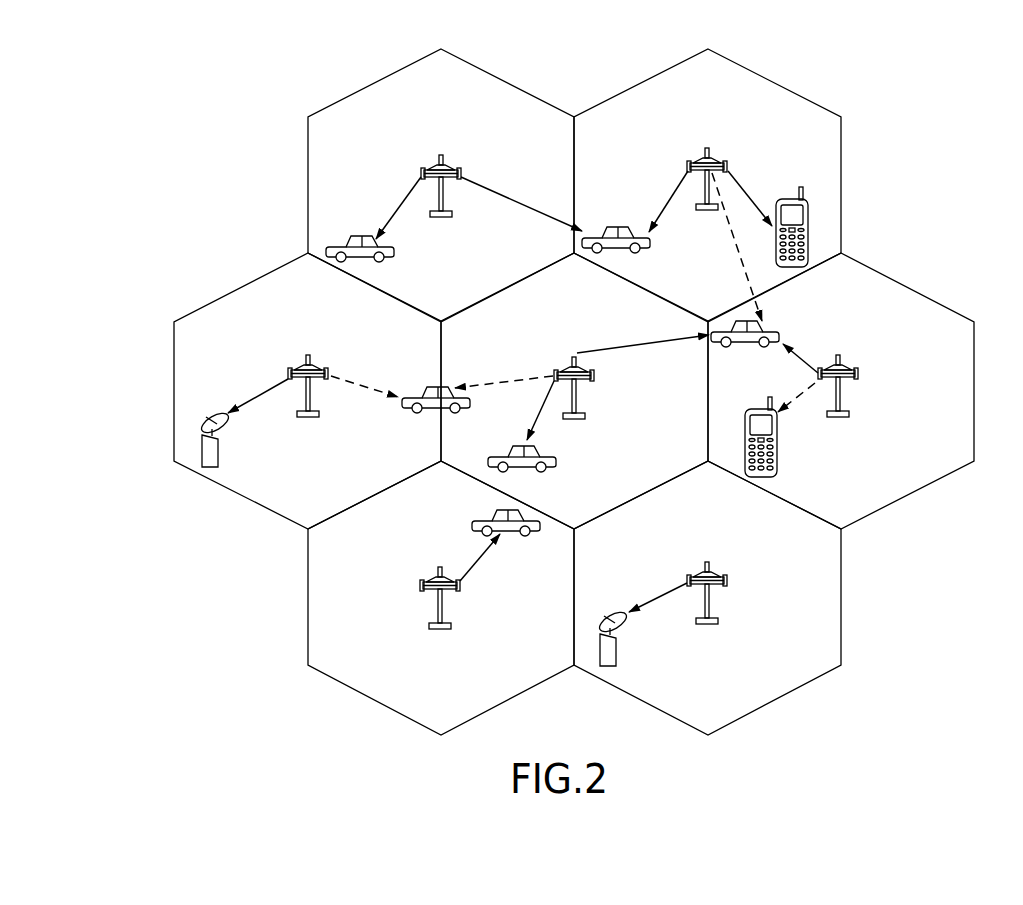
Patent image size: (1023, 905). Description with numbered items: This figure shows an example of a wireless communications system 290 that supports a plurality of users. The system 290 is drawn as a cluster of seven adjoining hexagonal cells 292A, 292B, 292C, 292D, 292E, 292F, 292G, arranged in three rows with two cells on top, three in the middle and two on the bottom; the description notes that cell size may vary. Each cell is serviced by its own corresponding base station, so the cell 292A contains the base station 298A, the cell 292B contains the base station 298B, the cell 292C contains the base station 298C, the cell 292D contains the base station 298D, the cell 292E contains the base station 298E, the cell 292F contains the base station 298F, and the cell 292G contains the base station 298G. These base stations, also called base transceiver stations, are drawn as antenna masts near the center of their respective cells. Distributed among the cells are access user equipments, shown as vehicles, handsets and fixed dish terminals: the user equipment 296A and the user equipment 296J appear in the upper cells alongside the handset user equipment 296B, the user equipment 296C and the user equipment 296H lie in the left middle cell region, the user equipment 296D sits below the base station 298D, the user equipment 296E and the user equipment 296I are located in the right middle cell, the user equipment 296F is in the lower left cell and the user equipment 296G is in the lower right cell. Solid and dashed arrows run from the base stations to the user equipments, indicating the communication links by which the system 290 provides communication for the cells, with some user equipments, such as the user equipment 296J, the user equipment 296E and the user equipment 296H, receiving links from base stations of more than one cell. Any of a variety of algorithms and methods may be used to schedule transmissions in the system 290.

The wireless communications system 290 is at (116, 122).
The cell 292A is at (461, 88).
The cell 292B is at (727, 88).
The cell 292C is at (330, 300).
The cell 292D is at (592, 302).
The cell 292E is at (861, 300).
The cell 292F is at (461, 502).
The cell 292G is at (730, 502).
The base station 298A is at (440, 150).
The base station 298B is at (707, 148).
The base station 298C is at (308, 355).
The base station 298D is at (574, 357).
The base station 298E is at (837, 355).
The base station 298F is at (440, 567).
The base station 298G is at (706, 562).
The user equipment 296A is at (394, 256).
The user equipment 296B is at (790, 195).
The user equipment 296C is at (219, 453).
The user equipment 296D is at (557, 463).
The user equipment 296E is at (742, 347).
The user equipment 296F is at (533, 533).
The user equipment 296G is at (617, 653).
The user equipment 296H is at (406, 413).
The user equipment 296I is at (778, 465).
The user equipment 296J is at (618, 227).